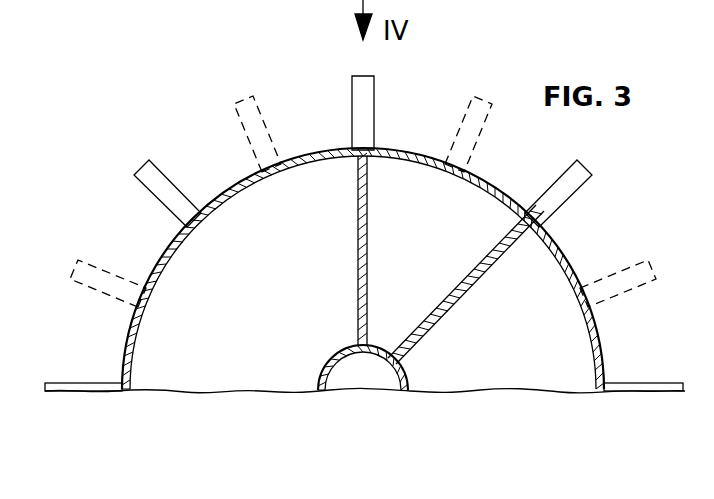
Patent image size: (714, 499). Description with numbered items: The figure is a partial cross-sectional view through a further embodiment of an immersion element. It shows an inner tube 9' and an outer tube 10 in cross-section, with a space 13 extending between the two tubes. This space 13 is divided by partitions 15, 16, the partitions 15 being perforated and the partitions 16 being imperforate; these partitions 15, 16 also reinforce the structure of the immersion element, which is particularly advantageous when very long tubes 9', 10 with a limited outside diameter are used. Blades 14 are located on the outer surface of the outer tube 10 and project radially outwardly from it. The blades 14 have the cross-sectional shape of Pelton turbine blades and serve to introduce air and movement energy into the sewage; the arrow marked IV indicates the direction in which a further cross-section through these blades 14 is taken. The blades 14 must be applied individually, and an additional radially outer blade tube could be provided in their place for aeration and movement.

The inner tube 9' is at (363, 386).
The outer tube 10 is at (131, 377).
The space 13 is at (223, 358).
The blades 14 is at (463, 140).
The perforated partitions 15 is at (368, 222).
The imperforate partitions 16 is at (467, 297).